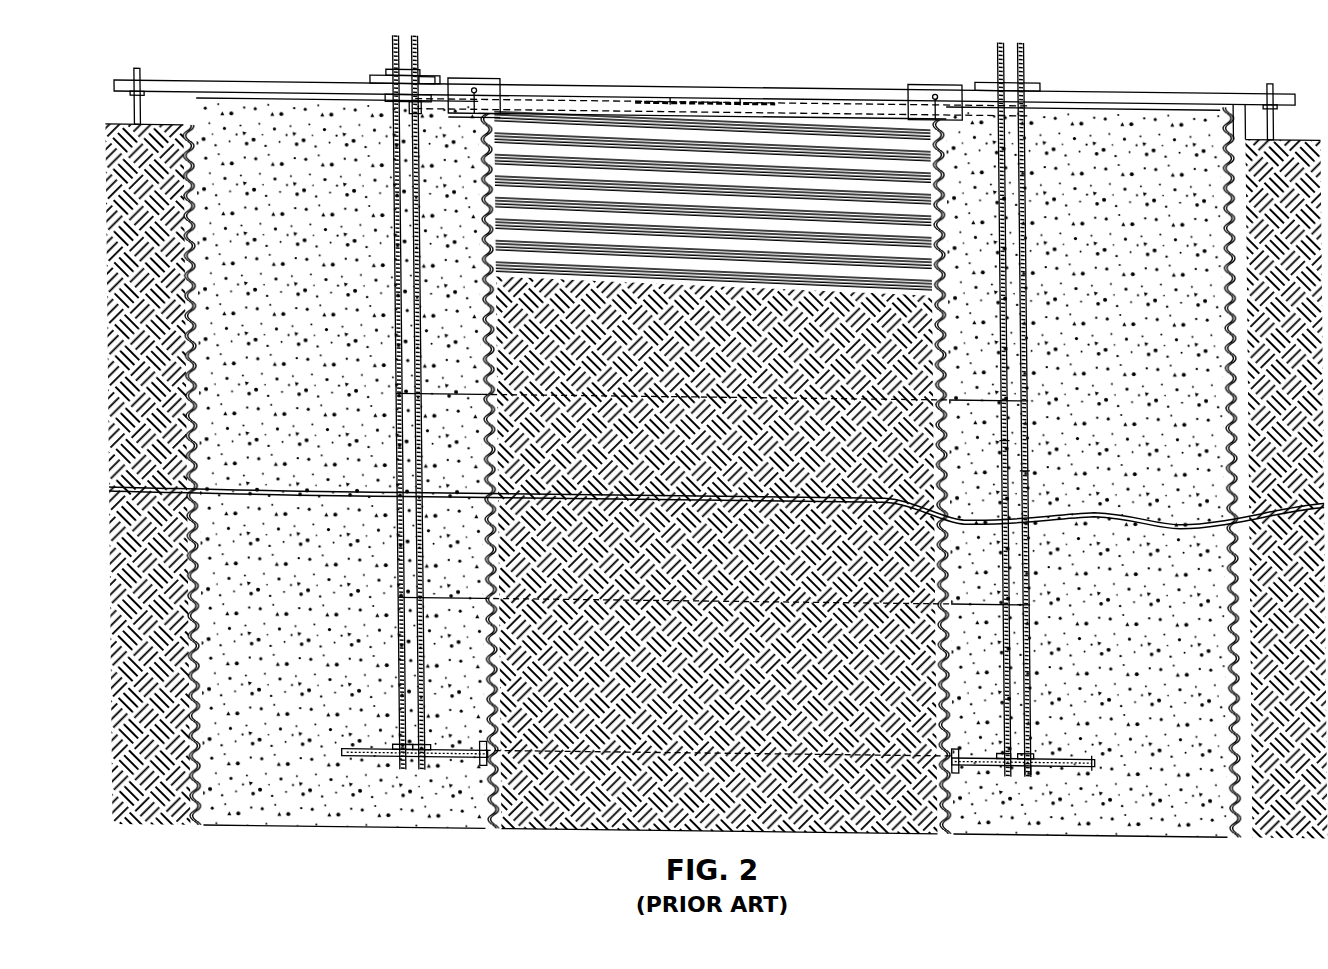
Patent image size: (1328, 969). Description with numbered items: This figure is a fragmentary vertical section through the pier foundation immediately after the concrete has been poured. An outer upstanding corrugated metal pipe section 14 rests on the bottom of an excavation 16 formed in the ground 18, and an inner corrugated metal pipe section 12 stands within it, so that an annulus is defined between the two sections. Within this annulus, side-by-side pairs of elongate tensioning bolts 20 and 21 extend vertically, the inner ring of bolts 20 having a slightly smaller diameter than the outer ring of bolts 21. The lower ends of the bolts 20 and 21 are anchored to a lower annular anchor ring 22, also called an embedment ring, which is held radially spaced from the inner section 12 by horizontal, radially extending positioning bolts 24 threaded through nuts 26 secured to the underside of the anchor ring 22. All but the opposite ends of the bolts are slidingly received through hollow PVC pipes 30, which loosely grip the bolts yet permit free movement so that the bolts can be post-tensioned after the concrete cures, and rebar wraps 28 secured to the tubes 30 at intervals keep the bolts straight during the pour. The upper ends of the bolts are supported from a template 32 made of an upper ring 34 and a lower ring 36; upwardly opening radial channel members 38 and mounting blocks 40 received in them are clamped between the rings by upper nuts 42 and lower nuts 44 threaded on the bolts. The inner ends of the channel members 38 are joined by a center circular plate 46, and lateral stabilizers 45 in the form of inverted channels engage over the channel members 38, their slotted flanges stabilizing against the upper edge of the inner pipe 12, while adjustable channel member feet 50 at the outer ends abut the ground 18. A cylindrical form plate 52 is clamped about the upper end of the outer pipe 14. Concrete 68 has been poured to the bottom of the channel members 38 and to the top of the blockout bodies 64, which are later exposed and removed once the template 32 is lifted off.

The inner corrugated metal pipe section 12 is at (858, 105).
The outer corrugated metal pipe section 14 is at (1226, 317).
The excavation 16 is at (1246, 795).
The ground 18 is at (1248, 96).
The tensioning bolts 20 is at (997, 35).
The tensioning bolts 21 is at (1026, 41).
The anchor ring 22 is at (1030, 713).
The positioning bolts 24 is at (969, 756).
The nuts 26 is at (1017, 766).
The rebar wraps 28 is at (973, 590).
The PVC pipes 30 is at (1026, 467).
The template 32 is at (485, 70).
The upper ring 34 is at (425, 73).
The lower ring 36 is at (392, 95).
The radial channel members 38 is at (1125, 83).
The mounting blocks 40 is at (375, 69).
The upper nuts 42 is at (420, 67).
The lower nuts 44 is at (418, 104).
The lateral stabilizers 45 is at (925, 80).
The center circular plate 46 is at (700, 92).
The channel member feet 50 is at (1290, 125).
The cylindrical form plate 52 is at (1218, 107).
The blockout bodies 64 is at (448, 123).
The concrete 68 is at (352, 802).